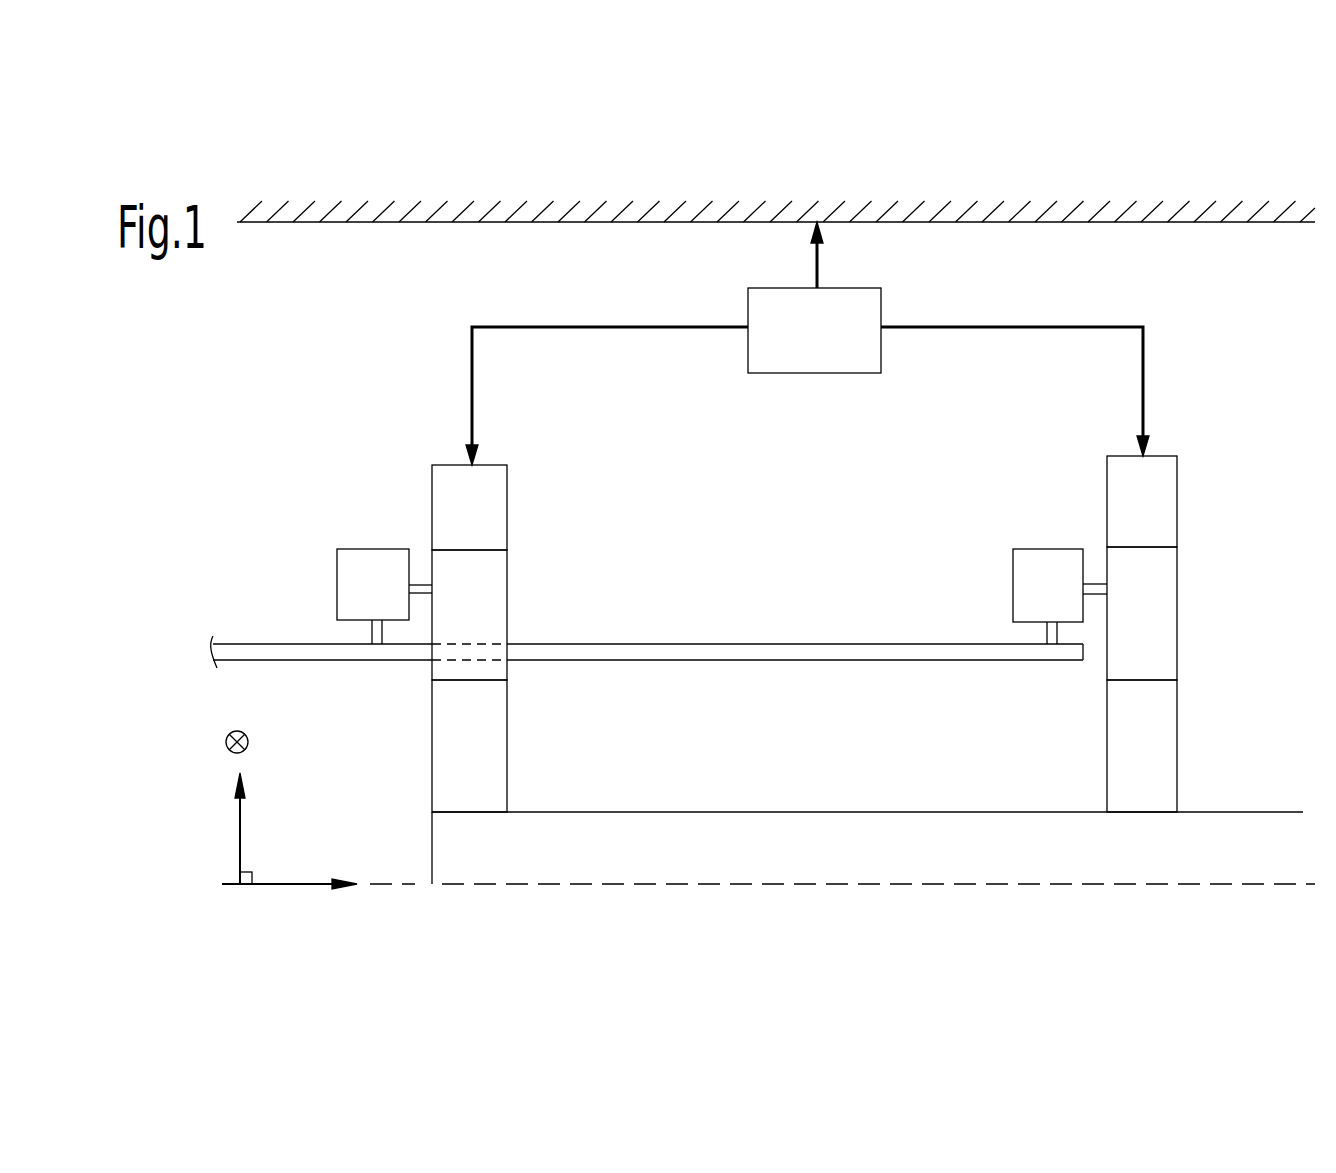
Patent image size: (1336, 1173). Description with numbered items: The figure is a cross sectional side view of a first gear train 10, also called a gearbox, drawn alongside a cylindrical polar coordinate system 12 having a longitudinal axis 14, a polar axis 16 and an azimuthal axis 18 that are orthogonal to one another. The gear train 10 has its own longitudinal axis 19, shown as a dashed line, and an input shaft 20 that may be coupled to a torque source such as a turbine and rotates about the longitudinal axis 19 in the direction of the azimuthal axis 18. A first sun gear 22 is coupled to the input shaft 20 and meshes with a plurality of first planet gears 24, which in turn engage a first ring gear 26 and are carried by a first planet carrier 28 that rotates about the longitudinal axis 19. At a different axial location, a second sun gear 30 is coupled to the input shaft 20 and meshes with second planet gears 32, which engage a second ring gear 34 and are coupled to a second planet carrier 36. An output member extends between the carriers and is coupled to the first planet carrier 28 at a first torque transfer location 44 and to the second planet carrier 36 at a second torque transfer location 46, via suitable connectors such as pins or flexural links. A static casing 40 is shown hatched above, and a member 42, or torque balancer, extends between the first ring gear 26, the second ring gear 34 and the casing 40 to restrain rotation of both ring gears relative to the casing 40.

The first gear train 10 is at (256, 396).
The cylindrical polar coordinate system 12 is at (310, 819).
The longitudinal axis 14 is at (286, 884).
The polar axis 16 is at (241, 828).
The azimuthal axis 18 is at (253, 740).
The longitudinal axis 19 is at (847, 884).
The input shaft 20 is at (1235, 822).
The first sun gear 22 is at (1129, 753).
The first planet gears 24 is at (1129, 623).
The first ring gear 26 is at (1129, 515).
The first planet carrier 28 is at (1035, 598).
The second sun gear 30 is at (457, 757).
The second planet gears 32 is at (457, 615).
The second ring gear 34 is at (457, 522).
The second planet carrier 36 is at (360, 598).
The casing 40 is at (1143, 222).
The member 42 is at (802, 343).
The first torque transfer location 44 is at (1051, 666).
The second torque transfer location 46 is at (377, 666).